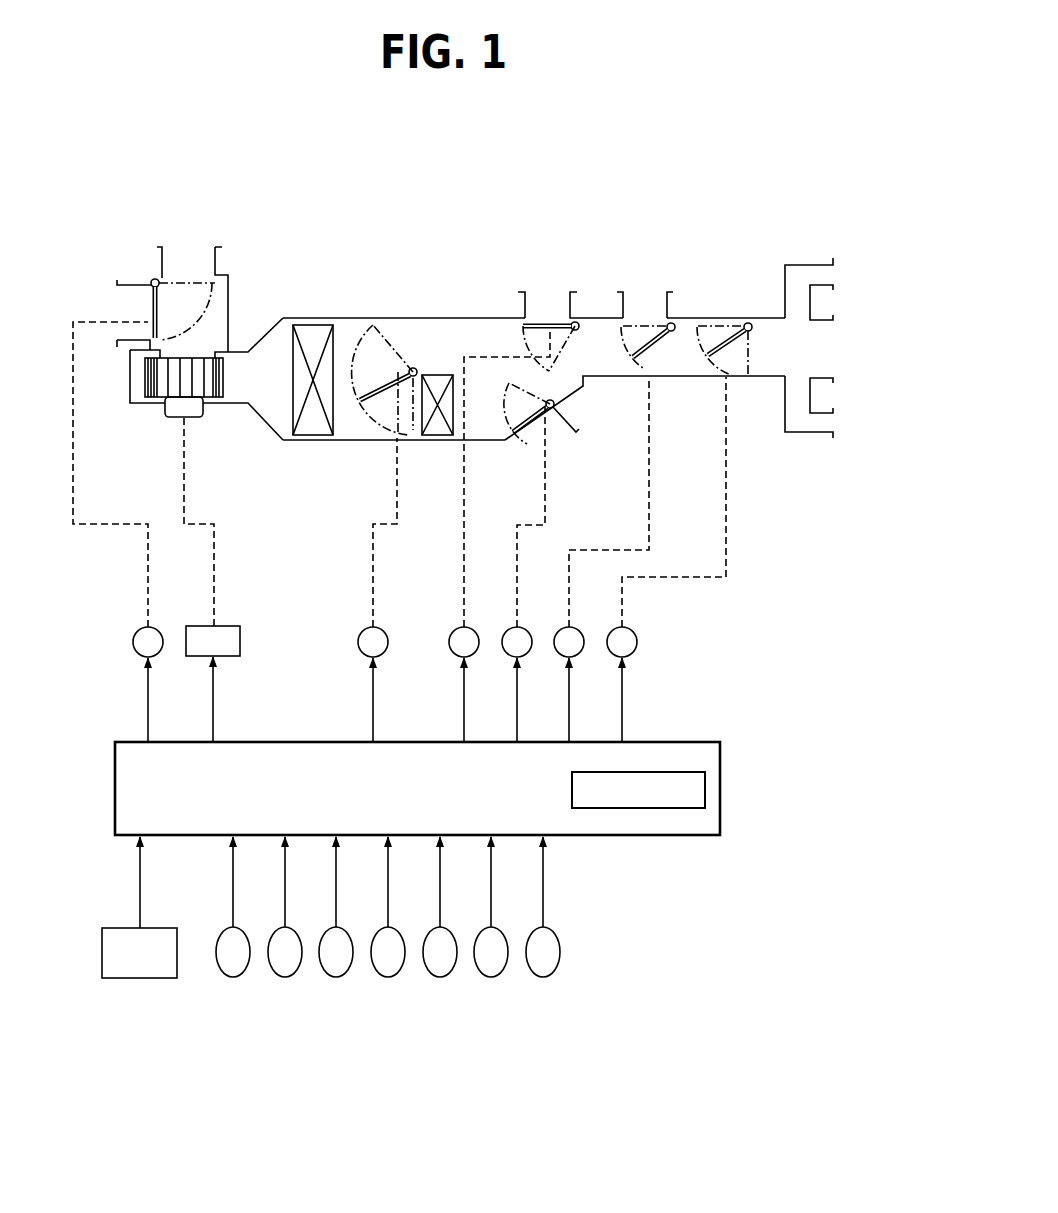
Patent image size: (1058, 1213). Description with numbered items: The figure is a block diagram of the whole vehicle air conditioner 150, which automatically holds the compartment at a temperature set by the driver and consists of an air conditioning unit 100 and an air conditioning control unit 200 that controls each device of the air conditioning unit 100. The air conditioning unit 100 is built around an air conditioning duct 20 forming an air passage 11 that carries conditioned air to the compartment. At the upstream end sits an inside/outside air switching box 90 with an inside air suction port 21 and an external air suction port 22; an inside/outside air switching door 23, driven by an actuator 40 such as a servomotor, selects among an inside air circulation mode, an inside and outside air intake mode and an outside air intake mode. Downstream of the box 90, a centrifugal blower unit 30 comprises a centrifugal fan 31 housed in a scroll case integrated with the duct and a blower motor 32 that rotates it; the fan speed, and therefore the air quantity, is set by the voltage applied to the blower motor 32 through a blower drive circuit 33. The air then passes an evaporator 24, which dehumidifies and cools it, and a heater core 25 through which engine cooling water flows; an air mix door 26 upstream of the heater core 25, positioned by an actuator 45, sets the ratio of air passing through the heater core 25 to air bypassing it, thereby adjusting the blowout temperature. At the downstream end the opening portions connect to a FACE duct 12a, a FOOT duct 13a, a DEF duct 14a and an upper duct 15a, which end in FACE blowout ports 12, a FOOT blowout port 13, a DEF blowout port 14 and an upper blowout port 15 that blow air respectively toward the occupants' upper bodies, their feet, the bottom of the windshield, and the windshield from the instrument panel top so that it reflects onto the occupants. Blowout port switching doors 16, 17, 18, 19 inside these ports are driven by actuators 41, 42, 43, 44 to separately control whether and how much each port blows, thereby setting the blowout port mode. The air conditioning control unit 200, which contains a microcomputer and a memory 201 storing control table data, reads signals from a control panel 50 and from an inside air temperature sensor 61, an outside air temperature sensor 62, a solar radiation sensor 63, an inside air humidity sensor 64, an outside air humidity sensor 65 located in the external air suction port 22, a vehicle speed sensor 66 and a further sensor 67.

The air passage 11 is at (437, 330).
The FACE blowout ports 12 is at (833, 349).
The FACE duct 12a is at (785, 392).
The FOOT blowout port 13 is at (548, 432).
The FOOT duct 13a is at (567, 422).
The DEF blowout port 14 is at (548, 303).
The DEF duct 14a is at (522, 303).
The upper blowout port 15 is at (643, 308).
The upper duct 15a is at (670, 305).
The blowout port switching door 16 is at (740, 322).
The blowout port switching door 17 is at (530, 447).
The blowout port switching door 18 is at (562, 322).
The blowout port switching door 19 is at (653, 343).
The air conditioning duct 20 is at (403, 318).
The inside air suction port 21 is at (130, 310).
The external air suction port 22 is at (182, 260).
The inside/outside air switching door 23 is at (137, 334).
The evaporator 24 is at (310, 325).
The heater core 25 is at (430, 435).
The air mix door 26 is at (363, 400).
The centrifugal blower unit 30 is at (153, 414).
The centrifugal fan 31 is at (147, 390).
The blower motor 32 is at (188, 413).
The blower drive circuit 33 is at (198, 658).
The actuator 40 is at (138, 660).
The actuator 41 is at (453, 660).
The actuator 42 is at (508, 660).
The actuator 43 is at (562, 660).
The actuator 44 is at (615, 660).
The actuator 45 is at (362, 660).
The control panel 50 is at (137, 978).
The inside air temperature sensor 61 is at (233, 977).
The outside air temperature sensor 62 is at (285, 977).
The solar radiation sensor 63 is at (336, 977).
The inside air humidity sensor 64 is at (388, 977).
The outside air humidity sensor 65 is at (440, 977).
The vehicle speed sensor 66 is at (491, 977).
The sensor 67 is at (543, 977).
The inside/outside air switching box 90 is at (245, 262).
The air conditioning unit 100 is at (457, 246).
The vehicle air conditioner 150 is at (780, 504).
The air conditioning control unit 200 is at (722, 787).
The memory 201 is at (637, 810).